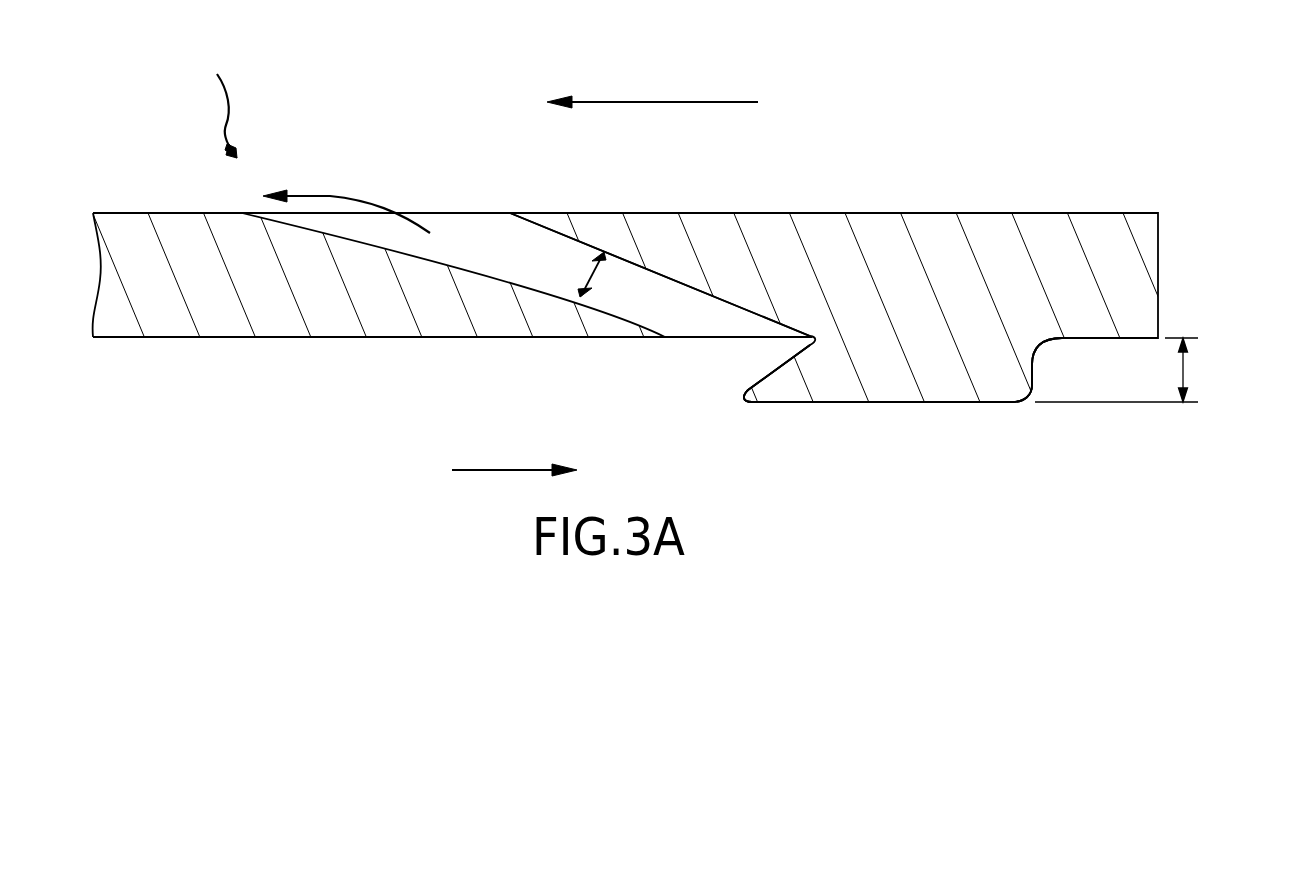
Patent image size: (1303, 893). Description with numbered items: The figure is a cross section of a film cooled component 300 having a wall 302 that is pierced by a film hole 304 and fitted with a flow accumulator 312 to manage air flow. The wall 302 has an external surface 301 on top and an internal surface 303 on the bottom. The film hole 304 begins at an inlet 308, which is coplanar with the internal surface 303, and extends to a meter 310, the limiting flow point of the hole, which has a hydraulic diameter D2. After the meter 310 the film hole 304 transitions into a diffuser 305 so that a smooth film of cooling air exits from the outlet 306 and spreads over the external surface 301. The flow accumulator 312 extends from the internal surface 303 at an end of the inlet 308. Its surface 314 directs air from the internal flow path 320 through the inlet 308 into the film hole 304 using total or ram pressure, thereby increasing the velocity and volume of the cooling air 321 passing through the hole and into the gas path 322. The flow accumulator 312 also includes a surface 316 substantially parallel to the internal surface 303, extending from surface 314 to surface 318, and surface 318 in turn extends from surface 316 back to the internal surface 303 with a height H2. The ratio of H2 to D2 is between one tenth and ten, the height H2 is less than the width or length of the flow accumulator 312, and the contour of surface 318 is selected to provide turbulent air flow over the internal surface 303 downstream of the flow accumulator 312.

The film cooled component 300 is at (220, 103).
The external surface 301 is at (120, 212).
The wall 302 is at (188, 304).
The internal surface 303 is at (350, 338).
The film hole 304 is at (530, 247).
The diffuser 305 is at (378, 233).
The outlet 306 is at (412, 213).
The inlet 308 is at (710, 339).
The meter 310 is at (603, 250).
The flow accumulator 312 is at (937, 375).
The surface 314 is at (772, 371).
The surface 316 is at (882, 403).
The surface 318 is at (1035, 366).
The internal flow path 320 is at (486, 470).
The cooling air 321 is at (340, 196).
The gas path 322 is at (743, 102).
The hydraulic diameter D2 is at (592, 275).
The height H2 is at (1184, 370).